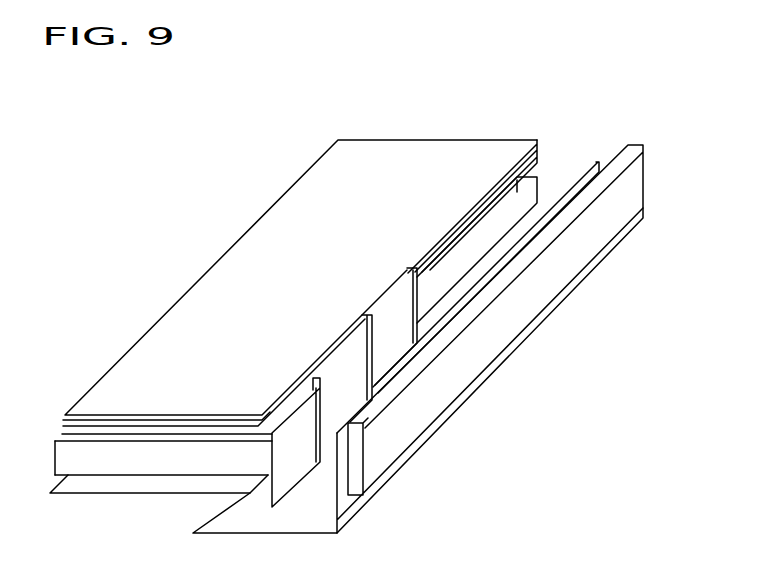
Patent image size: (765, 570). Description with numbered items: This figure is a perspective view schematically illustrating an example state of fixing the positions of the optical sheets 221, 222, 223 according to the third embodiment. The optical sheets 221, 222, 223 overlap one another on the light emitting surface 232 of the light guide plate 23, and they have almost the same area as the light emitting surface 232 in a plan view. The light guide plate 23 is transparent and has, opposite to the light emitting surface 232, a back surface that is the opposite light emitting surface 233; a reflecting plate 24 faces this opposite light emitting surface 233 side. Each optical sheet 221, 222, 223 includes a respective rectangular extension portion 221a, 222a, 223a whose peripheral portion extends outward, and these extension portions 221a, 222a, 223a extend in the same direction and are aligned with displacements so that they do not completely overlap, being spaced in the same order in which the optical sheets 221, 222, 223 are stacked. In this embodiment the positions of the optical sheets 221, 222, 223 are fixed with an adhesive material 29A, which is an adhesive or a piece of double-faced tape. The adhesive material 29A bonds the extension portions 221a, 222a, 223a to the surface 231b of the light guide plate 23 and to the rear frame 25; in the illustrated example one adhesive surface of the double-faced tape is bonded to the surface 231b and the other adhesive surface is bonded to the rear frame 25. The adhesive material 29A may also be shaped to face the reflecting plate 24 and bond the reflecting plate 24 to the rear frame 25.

The optical sheet 223 is at (68, 414).
The optical sheet 222 is at (64, 418).
The optical sheet 221 is at (62, 430).
The light guide plate 23 is at (62, 461).
The opposite light emitting surface 233 is at (88, 478).
The reflecting plate 24 is at (147, 498).
The adhesive material 29A is at (347, 505).
The rear frame 25 is at (632, 180).
The extension portion 221a is at (290, 457).
The extension portion 222a is at (340, 406).
The extension portion 223a is at (387, 348).
The light emitting surface 232 is at (526, 140).
The surface of the light guide plate 231b is at (483, 249).